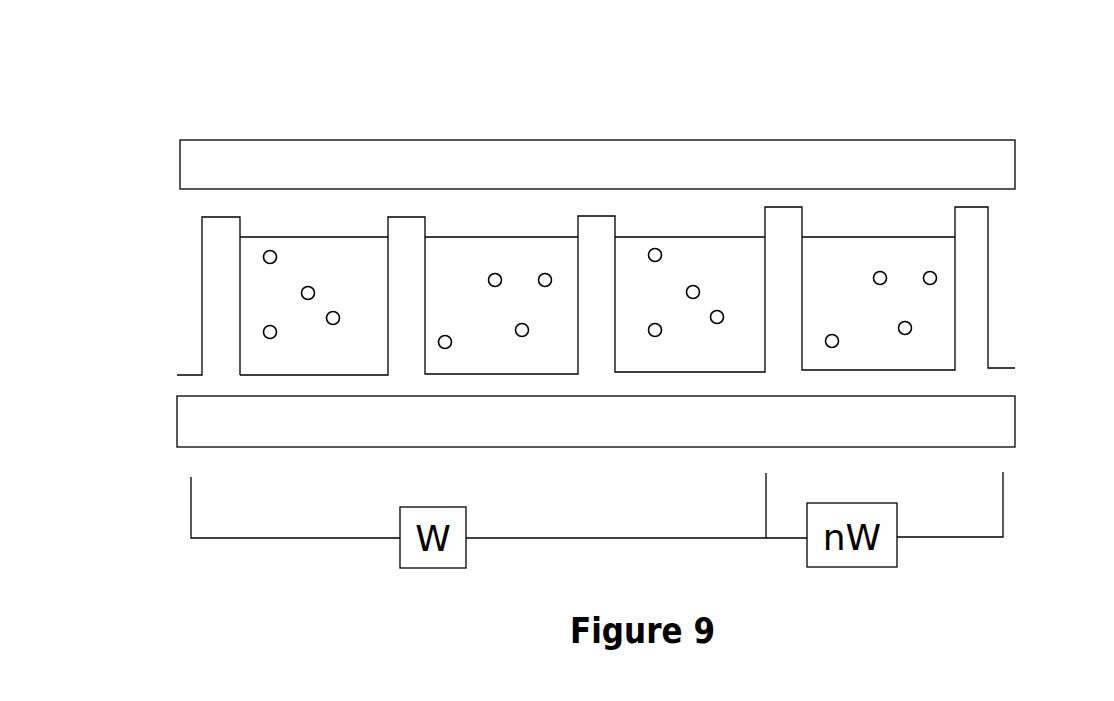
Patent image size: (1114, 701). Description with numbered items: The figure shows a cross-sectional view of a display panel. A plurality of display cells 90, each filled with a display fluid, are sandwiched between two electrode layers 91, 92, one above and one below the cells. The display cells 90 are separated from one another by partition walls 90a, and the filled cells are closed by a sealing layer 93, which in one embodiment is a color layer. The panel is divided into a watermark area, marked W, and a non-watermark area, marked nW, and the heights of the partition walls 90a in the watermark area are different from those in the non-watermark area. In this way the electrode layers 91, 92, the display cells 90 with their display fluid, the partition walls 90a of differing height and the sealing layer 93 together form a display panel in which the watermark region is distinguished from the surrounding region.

The display cells 90 is at (263, 288).
The partition walls 90a is at (228, 338).
The electrode layer 91 is at (934, 168).
The electrode layer 92 is at (939, 417).
The sealing layer 93 is at (668, 210).